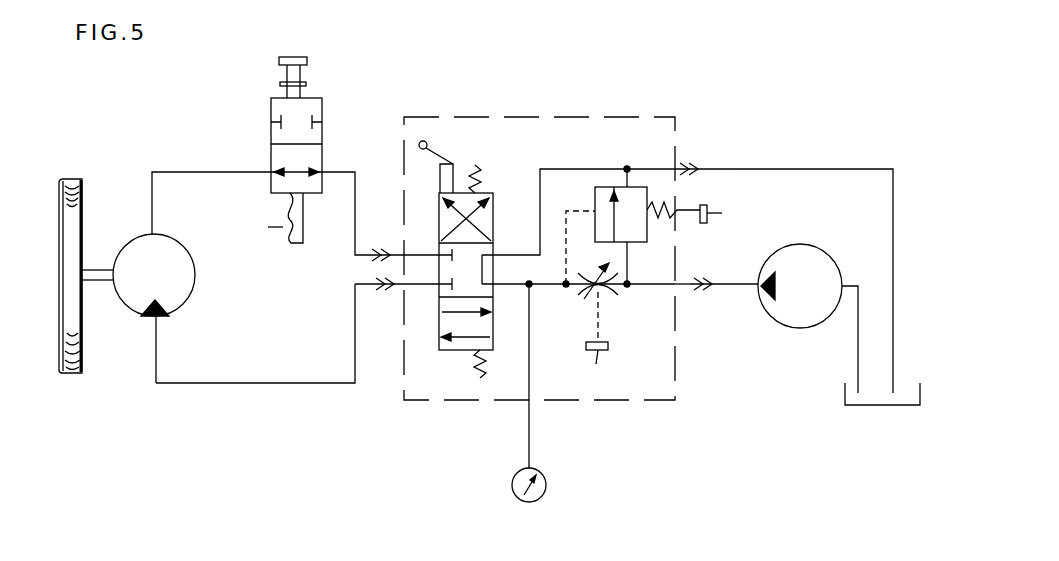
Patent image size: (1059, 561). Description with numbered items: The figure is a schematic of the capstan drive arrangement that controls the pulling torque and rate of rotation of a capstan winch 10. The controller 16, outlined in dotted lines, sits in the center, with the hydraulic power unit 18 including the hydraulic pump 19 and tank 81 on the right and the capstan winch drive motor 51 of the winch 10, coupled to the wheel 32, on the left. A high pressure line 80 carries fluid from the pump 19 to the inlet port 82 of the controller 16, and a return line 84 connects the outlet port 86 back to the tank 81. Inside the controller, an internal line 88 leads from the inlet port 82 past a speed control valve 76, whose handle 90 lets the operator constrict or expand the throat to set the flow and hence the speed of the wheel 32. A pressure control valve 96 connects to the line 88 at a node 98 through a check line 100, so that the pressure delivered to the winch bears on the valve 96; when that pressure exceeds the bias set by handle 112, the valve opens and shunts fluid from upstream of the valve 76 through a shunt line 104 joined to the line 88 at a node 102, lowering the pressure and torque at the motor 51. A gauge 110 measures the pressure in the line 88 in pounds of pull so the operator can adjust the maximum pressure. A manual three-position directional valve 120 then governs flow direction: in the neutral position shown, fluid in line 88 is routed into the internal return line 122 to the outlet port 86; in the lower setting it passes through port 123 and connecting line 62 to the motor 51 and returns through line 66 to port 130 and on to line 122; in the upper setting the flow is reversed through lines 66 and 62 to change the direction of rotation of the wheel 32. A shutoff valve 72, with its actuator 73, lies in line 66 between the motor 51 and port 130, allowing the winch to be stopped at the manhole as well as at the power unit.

The capstan winch 10 is at (251, 396).
The controller 16 is at (527, 98).
The hydraulic power unit 18 is at (811, 416).
The hydraulic pump 19 is at (806, 329).
The wheel 32 is at (58, 232).
The capstan winch drive motor 51 is at (195, 277).
The connecting line 62 is at (341, 386).
The line 66 is at (345, 170).
The shutoff valve 72 is at (271, 133).
The valve actuator 73 is at (307, 62).
The speed control valve 76 is at (605, 294).
The high pressure line 80 is at (746, 291).
The tank 81 is at (900, 390).
The inlet port 82 is at (705, 291).
The return line 84 is at (840, 168).
The outlet port 86 is at (697, 165).
The internal line 88 is at (664, 290).
The handle 90 is at (597, 341).
The pressure control valve 96 is at (604, 186).
The node 98 is at (565, 287).
The check line 100 is at (568, 208).
The node 102 is at (631, 283).
The shunt line 104 is at (633, 260).
The gauge 110 is at (546, 484).
The handle 112 is at (706, 214).
The three-position directional valve 120 is at (493, 184).
The return line 122 is at (657, 170).
The port 123 is at (393, 290).
The port 130 is at (383, 250).